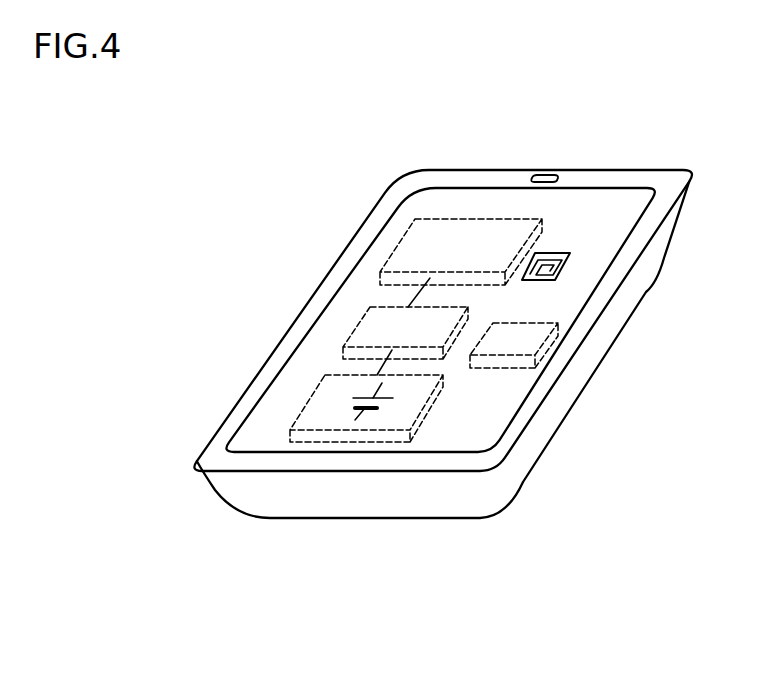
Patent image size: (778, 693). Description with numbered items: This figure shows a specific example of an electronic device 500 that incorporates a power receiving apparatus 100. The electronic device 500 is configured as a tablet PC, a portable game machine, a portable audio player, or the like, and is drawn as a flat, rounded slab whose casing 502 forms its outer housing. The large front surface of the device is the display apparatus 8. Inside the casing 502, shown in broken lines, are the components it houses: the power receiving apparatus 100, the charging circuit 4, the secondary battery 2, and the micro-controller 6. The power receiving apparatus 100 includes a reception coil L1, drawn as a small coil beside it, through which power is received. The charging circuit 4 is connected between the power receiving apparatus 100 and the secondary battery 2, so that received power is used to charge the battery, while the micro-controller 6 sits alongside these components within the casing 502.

The electronic device 500 is at (443, 379).
The casing 502 is at (515, 465).
The display apparatus 8 is at (618, 203).
The power receiving apparatus 100 is at (420, 250).
The charging circuit 4 is at (375, 333).
The secondary battery 2 is at (312, 435).
The micro-controller 6 is at (523, 346).
The reception coil L1 is at (569, 258).